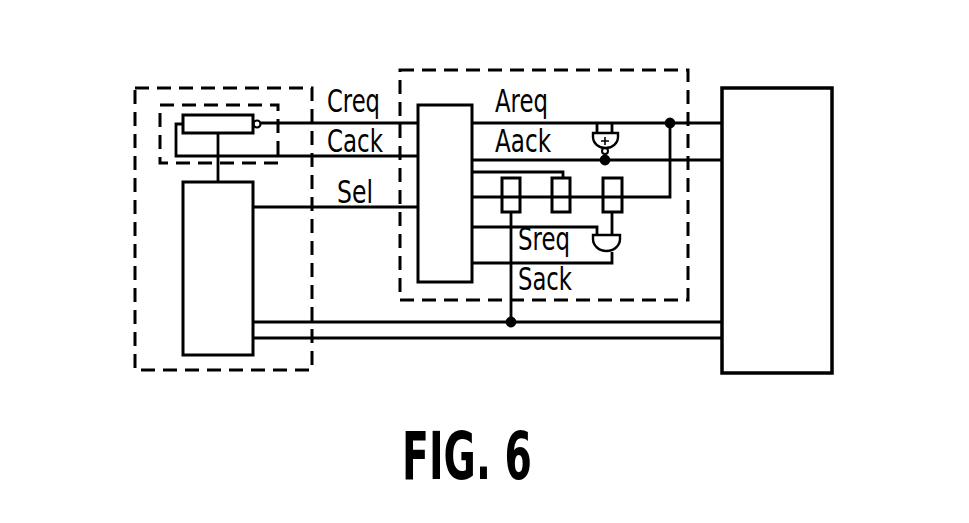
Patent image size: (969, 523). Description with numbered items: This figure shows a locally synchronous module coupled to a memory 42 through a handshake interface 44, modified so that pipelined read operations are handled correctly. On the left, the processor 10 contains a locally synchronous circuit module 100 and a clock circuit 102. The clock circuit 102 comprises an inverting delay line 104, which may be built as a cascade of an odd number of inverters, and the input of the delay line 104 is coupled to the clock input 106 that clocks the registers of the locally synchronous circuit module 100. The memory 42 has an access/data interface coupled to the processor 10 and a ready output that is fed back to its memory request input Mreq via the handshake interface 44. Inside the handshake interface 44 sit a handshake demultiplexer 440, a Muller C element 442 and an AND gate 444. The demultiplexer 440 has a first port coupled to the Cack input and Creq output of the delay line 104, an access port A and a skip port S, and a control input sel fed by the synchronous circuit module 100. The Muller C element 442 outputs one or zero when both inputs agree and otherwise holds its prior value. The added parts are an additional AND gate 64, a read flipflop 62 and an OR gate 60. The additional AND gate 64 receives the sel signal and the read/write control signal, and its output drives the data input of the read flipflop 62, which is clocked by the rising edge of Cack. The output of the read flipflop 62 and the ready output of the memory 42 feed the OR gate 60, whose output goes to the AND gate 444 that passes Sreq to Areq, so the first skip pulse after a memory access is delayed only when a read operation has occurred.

The processor 10 is at (135, 119).
The locally synchronous circuit module 100 is at (183, 273).
The clock circuit 102 is at (182, 104).
The inverting delay line 104 is at (222, 114).
The clock input 106 is at (218, 183).
The handshake interface 44 is at (515, 68).
The handshake demultiplexer 440 is at (446, 104).
The Muller C element 442 is at (618, 146).
The AND gate 444 is at (612, 263).
The OR gate 60 is at (623, 203).
The read flipflop 62 is at (566, 172).
The additional AND gate 64 is at (511, 212).
The memory 42 is at (775, 88).